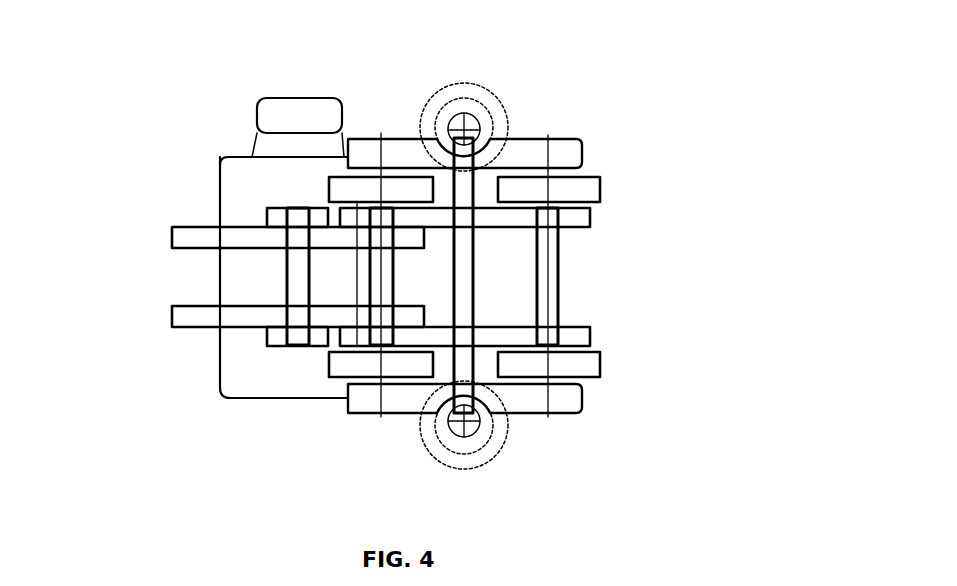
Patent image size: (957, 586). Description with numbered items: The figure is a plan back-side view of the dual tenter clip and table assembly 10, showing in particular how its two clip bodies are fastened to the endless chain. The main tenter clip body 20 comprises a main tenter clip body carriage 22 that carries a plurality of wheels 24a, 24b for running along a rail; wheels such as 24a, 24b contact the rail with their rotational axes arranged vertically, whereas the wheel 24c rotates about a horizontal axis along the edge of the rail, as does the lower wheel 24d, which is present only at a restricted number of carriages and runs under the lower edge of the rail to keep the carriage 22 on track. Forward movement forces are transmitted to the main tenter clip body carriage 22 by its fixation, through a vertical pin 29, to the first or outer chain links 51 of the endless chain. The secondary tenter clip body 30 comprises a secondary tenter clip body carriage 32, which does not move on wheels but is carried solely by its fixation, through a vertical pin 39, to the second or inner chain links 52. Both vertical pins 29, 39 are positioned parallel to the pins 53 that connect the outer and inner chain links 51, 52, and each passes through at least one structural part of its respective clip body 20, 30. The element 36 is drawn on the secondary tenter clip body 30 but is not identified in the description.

The dual tenter clip and table assembly 10 is at (528, 452).
The main tenter clip body 20 is at (510, 152).
The main tenter clip body carriage 22 is at (566, 147).
The wheel 24a is at (572, 187).
The wheel 24b is at (565, 360).
The wheel 24c is at (442, 107).
The wheel 24d is at (423, 445).
The vertical pin 29 is at (445, 243).
The secondary tenter clip body 30 is at (227, 173).
The secondary tenter clip body carriage 32 is at (207, 164).
The tab 36 is at (270, 117).
The vertical pin 39 is at (282, 272).
The first chain link 51 is at (492, 338).
The second chain link 52 is at (227, 316).
The pin 53 is at (643, 420).